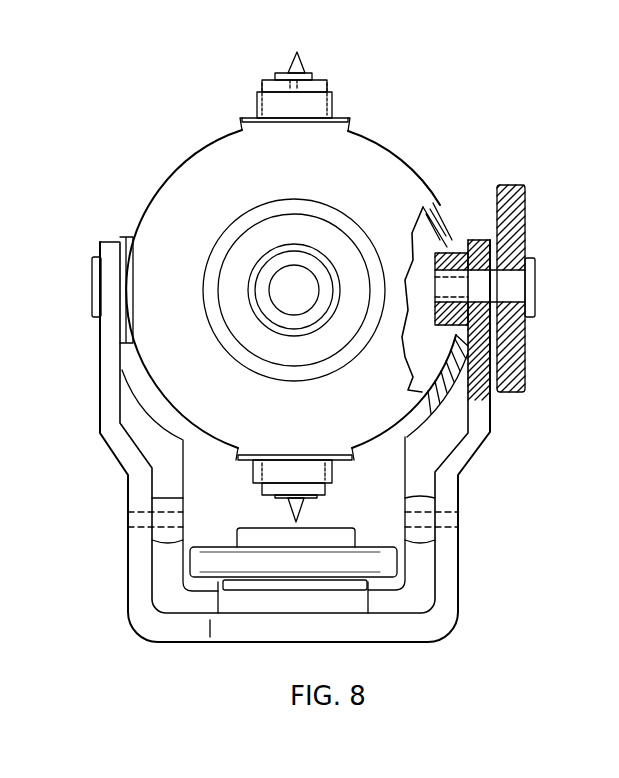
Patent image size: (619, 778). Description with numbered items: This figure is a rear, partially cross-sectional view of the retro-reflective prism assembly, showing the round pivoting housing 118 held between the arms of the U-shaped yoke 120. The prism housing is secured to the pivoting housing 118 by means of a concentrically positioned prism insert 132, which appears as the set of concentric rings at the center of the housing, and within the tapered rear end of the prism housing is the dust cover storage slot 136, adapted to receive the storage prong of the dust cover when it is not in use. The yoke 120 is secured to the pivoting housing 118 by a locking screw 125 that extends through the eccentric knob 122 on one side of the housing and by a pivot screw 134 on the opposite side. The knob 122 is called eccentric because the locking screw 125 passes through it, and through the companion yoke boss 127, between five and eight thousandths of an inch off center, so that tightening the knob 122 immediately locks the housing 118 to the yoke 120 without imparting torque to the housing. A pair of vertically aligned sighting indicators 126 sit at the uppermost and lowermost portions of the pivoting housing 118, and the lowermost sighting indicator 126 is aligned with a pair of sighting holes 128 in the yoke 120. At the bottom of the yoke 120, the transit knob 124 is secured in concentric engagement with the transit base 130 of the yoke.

The pivoting housing 118 is at (183, 197).
The yoke 120 is at (100, 437).
The eccentric knob 122 is at (530, 210).
The transit knob 124 is at (200, 570).
The locking screw 125 is at (537, 278).
The sighting indicators 126 is at (305, 60).
The yoke boss 127 is at (468, 240).
The sighting holes 128 is at (128, 518).
The transit base 130 is at (238, 598).
The prism insert 132 is at (240, 268).
The pivot screw 134 is at (92, 289).
The dust cover storage slot 136 is at (272, 287).